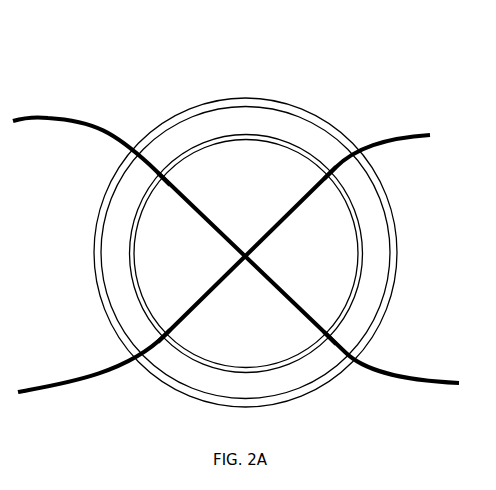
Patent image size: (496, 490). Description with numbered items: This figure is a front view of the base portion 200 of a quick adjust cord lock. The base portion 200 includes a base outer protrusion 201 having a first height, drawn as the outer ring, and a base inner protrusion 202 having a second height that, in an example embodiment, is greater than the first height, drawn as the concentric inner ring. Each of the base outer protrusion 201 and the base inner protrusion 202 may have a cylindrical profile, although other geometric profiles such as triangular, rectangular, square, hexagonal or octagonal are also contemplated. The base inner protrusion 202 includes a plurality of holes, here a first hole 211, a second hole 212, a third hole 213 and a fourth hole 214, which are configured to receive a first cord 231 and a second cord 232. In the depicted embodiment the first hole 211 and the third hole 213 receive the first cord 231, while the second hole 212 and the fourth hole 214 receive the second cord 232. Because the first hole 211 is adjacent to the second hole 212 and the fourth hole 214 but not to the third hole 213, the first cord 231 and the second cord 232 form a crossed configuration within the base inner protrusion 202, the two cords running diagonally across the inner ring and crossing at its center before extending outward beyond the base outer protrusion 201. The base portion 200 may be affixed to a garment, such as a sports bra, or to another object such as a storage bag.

The base portion 200 is at (231, 217).
The base outer protrusion 201 is at (245, 233).
The base inner protrusion 202 is at (246, 226).
The first hole 211 is at (181, 134).
The second hole 212 is at (338, 173).
The third hole 213 is at (336, 334).
The fourth hole 214 is at (156, 336).
The first cord 231 is at (243, 228).
The second cord 232 is at (239, 243).